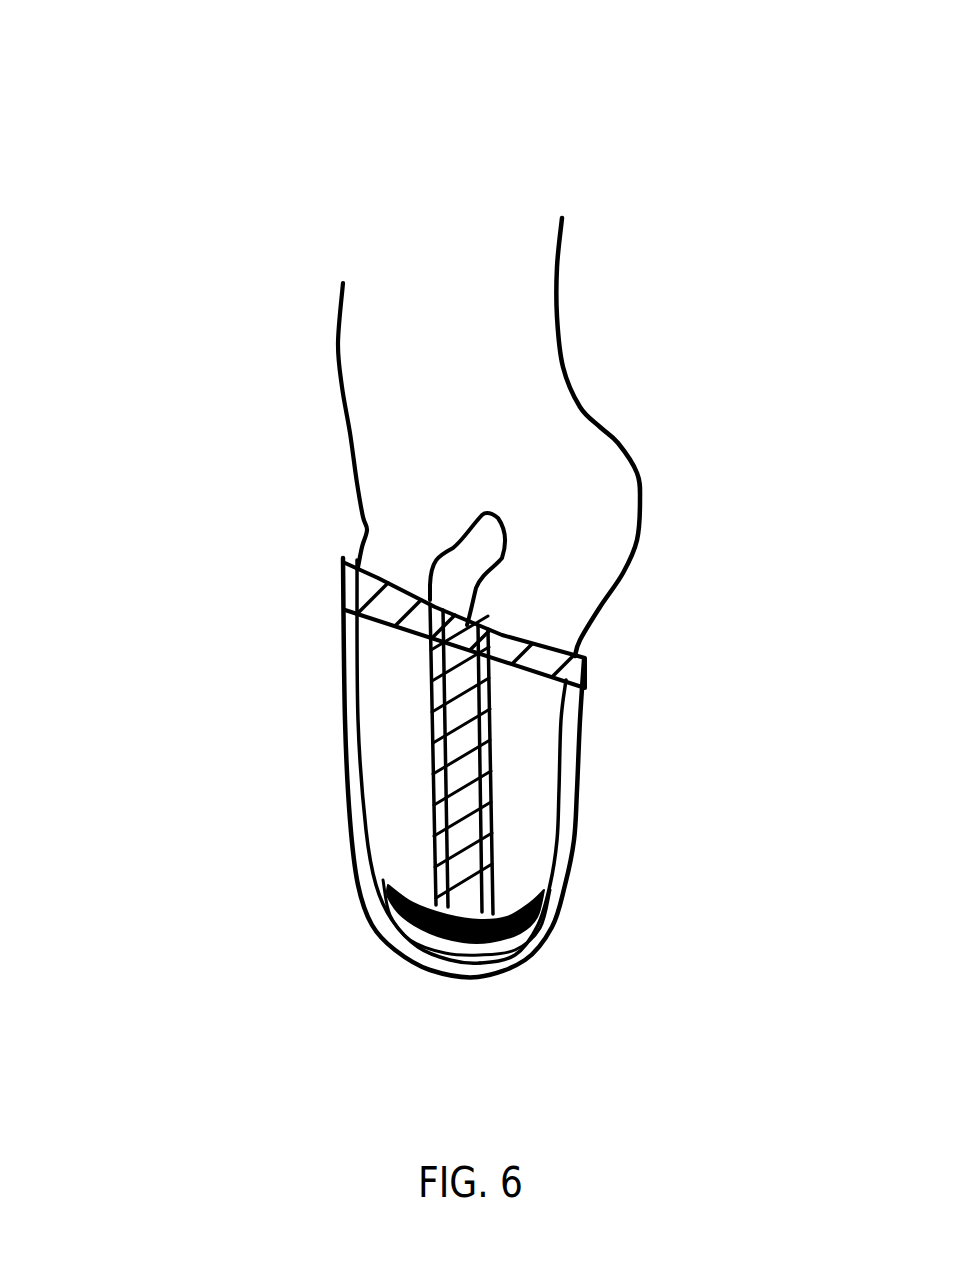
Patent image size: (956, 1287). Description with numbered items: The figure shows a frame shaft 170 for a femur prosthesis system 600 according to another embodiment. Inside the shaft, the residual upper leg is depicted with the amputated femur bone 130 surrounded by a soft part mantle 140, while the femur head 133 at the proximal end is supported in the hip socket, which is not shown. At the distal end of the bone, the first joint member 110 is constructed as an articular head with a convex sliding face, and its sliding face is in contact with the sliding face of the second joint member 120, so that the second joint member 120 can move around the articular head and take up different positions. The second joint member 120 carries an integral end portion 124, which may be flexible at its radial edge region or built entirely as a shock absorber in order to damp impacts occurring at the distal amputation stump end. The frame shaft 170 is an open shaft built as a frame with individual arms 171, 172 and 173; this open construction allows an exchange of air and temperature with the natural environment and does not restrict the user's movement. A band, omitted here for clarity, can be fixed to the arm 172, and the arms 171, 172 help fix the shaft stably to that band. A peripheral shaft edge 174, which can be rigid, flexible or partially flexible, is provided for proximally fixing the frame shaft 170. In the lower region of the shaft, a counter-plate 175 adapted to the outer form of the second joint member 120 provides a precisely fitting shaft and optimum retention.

The femur prosthesis system 600 is at (470, 207).
The femur bone 130 is at (450, 573).
The femur head 133 is at (492, 528).
The peripheral shaft edge 174 is at (395, 618).
The arm 173 is at (578, 718).
The arm 171 is at (352, 695).
The arm 172 is at (480, 732).
The soft part mantle 140 is at (397, 808).
The first joint member 110 is at (504, 901).
The end portion 124 is at (397, 908).
The counter-plate 175 is at (425, 966).
The second joint member 120 is at (493, 967).
The frame shaft 170 is at (576, 938).